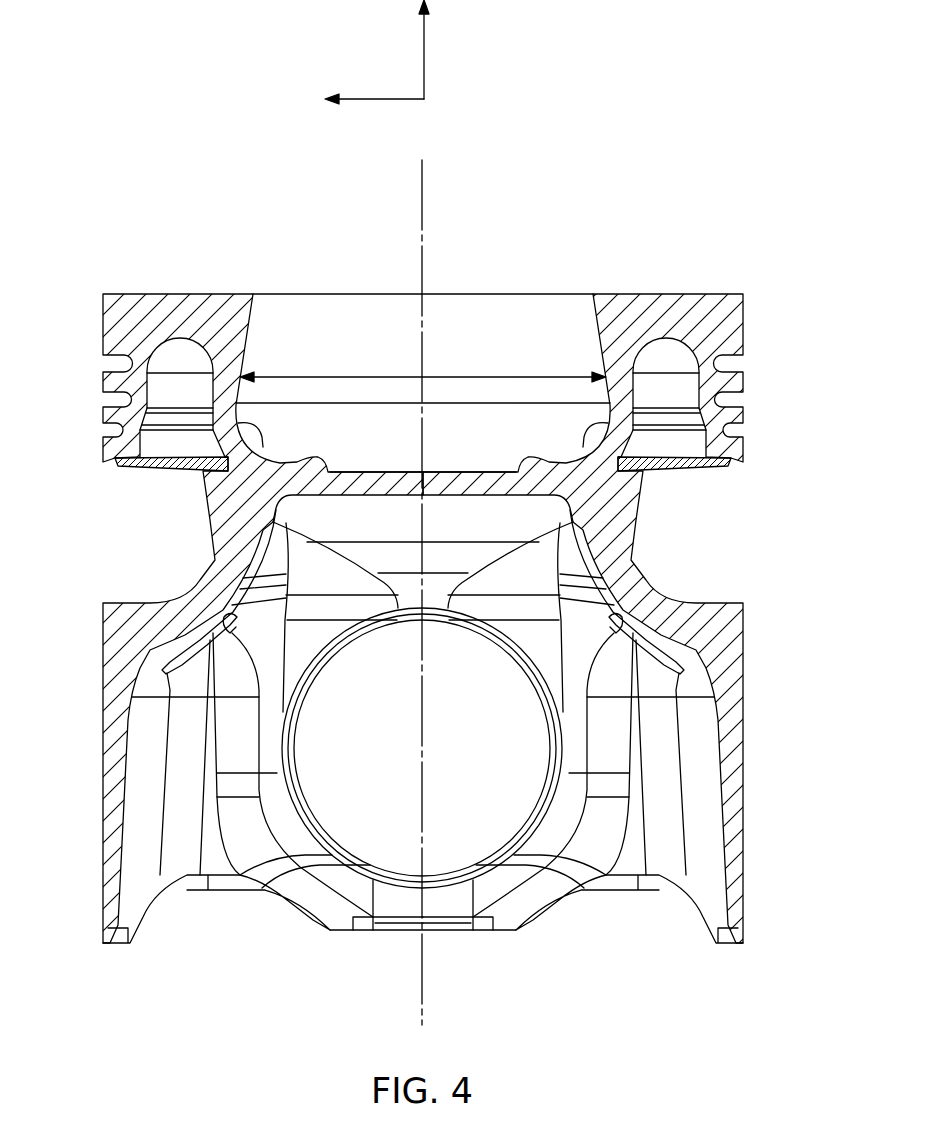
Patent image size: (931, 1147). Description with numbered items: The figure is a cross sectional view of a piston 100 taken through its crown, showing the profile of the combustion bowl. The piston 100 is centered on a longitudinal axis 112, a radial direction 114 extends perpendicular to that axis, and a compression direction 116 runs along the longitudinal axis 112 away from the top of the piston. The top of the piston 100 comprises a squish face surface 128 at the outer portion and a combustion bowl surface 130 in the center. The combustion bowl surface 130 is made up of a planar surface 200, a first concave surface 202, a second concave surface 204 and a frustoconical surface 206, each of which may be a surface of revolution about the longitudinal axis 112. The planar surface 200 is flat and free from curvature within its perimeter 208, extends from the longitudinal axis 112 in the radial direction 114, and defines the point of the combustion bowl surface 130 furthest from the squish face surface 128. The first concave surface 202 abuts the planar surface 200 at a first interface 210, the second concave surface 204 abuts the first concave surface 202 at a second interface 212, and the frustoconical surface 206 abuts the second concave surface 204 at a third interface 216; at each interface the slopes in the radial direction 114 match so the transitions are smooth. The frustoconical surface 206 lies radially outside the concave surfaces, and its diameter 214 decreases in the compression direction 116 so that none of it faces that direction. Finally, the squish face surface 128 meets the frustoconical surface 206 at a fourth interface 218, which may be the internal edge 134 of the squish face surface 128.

The piston 100 is at (664, 121).
The longitudinal axis 112 is at (424, 197).
The radial direction 114 is at (352, 98).
The compression direction 116 is at (425, 40).
The squish face surface 128 is at (145, 293).
The combustion bowl surface 130 is at (596, 321).
The internal edge 134 is at (253, 294).
The planar surface 200 is at (452, 472).
The first concave surface 202 is at (260, 458).
The second concave surface 204 is at (215, 467).
The frustoconical surface 206 is at (244, 343).
The perimeter 208 is at (320, 462).
The first interface 210 is at (330, 462).
The second interface 212 is at (268, 466).
The diameter 214 is at (400, 377).
The third interface 216 is at (400, 404).
The fourth interface 218 is at (253, 294).